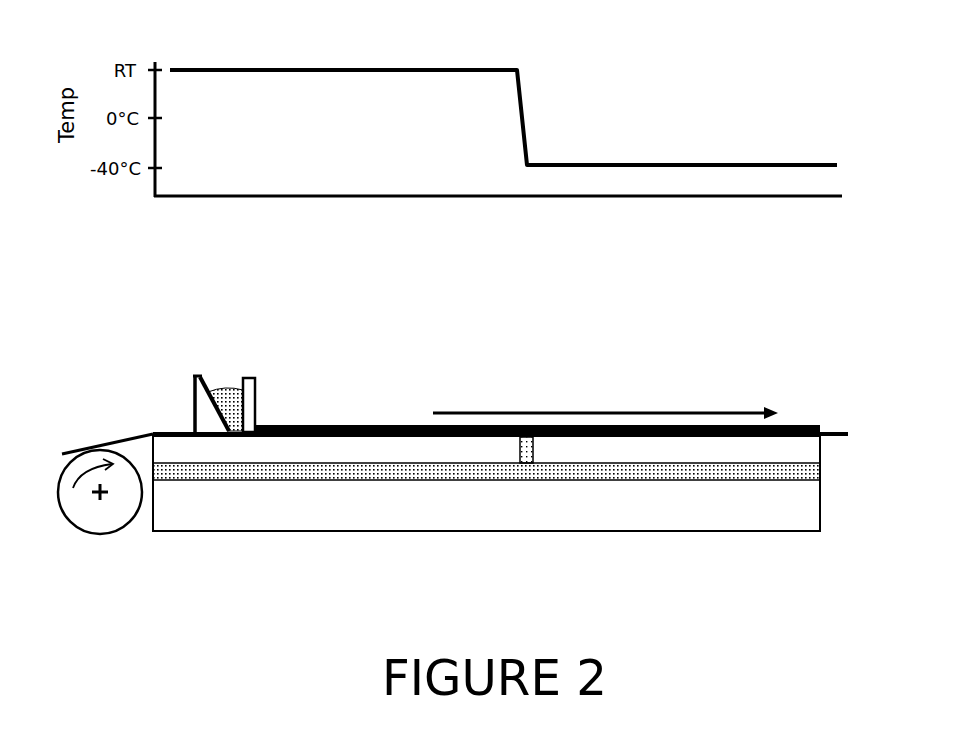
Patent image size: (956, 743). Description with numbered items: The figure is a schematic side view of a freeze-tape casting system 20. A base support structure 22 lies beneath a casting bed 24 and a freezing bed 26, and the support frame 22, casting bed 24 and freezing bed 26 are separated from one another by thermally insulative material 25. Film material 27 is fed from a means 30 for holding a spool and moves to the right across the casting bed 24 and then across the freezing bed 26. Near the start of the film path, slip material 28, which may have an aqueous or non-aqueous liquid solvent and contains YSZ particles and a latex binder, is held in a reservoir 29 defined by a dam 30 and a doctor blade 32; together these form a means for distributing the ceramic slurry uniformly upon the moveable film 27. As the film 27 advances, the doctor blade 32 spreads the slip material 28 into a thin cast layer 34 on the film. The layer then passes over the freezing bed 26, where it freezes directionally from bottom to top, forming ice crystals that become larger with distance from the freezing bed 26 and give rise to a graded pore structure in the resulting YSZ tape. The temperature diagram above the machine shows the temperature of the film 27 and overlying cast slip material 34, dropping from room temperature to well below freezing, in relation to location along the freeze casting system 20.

The freeze-tape casting system 20 is at (636, 308).
The base support structure 22 is at (690, 518).
The casting bed 24 is at (242, 455).
The thermally insulative material 25 is at (648, 472).
The freezing bed 26 is at (785, 445).
The film material 27 is at (130, 440).
The slip material 28 is at (230, 397).
The reservoir 29 is at (220, 378).
The dam 30 is at (203, 413).
The doctor blade 32 is at (249, 412).
The thin cast layer 34 is at (367, 425).